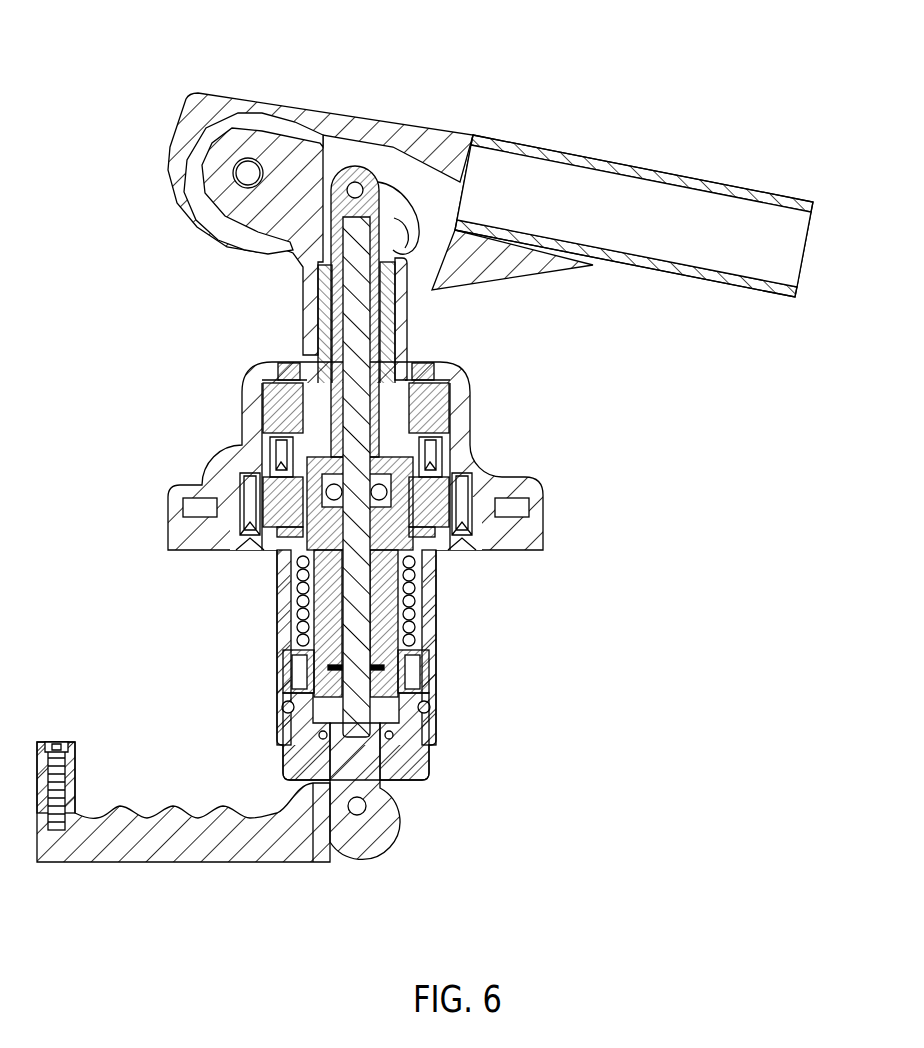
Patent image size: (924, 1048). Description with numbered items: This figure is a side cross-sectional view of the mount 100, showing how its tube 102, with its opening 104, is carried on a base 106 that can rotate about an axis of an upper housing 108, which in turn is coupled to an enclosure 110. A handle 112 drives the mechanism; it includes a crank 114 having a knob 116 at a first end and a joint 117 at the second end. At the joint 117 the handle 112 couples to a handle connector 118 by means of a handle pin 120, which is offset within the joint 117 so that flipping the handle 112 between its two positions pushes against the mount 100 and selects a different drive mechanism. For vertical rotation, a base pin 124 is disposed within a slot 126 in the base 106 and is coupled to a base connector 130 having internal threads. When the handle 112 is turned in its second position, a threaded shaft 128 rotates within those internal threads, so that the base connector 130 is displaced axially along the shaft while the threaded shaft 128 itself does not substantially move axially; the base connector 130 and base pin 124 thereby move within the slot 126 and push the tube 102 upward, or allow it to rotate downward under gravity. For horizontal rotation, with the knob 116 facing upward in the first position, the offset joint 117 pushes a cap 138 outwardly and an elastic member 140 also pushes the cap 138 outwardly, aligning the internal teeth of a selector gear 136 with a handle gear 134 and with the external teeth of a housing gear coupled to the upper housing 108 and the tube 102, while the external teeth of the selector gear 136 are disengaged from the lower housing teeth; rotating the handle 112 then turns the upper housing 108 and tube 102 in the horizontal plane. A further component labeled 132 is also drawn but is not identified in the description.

The mount 100 is at (628, 73).
The tube 102 is at (634, 204).
The opening 104 is at (727, 222).
The base 106 is at (364, 211).
The upper housing 108 is at (303, 305).
The enclosure 110 is at (385, 574).
The handle 112 is at (246, 805).
The crank 114 is at (205, 863).
The knob 116 is at (72, 742).
The joint 117 is at (392, 822).
The handle connector 118 is at (367, 788).
The handle pin 120 is at (370, 817).
The base pin 124 is at (351, 258).
The slot 126 is at (397, 220).
The threaded shaft 128 is at (357, 592).
The base connector 130 is at (343, 168).
The pivot hole 132 is at (245, 175).
The handle gear 134 is at (387, 685).
The selector gear 136 is at (420, 673).
The cap 138 is at (418, 760).
The elastic member 140 is at (412, 592).